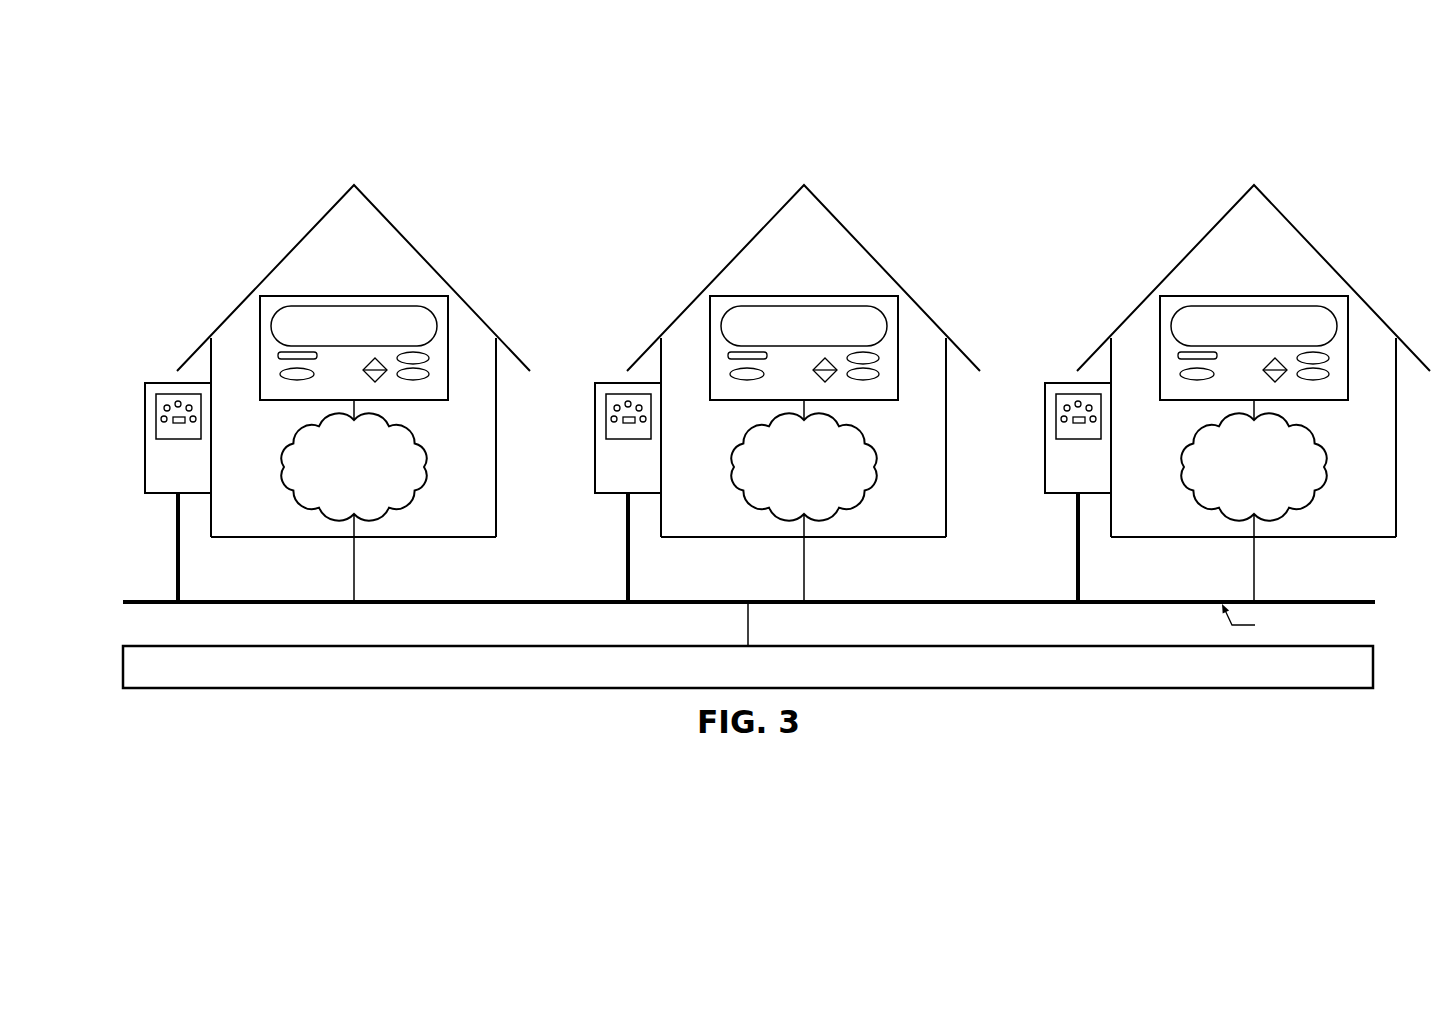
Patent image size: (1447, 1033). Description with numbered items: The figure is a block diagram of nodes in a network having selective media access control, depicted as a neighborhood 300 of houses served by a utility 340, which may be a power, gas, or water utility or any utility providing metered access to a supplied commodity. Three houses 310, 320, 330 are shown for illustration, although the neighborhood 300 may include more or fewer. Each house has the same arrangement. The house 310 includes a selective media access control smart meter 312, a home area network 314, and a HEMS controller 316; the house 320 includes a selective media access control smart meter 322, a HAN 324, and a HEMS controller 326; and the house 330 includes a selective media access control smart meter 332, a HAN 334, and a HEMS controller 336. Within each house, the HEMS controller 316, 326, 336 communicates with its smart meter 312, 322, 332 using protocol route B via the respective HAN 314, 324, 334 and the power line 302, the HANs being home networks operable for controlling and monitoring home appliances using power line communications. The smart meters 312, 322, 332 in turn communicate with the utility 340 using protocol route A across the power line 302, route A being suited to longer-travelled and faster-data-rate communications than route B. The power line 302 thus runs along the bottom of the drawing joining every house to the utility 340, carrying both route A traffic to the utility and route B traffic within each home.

The neighborhood 300 is at (1145, 122).
The power line 302 is at (1198, 601).
The house 310 is at (446, 275).
The selective media access control smart meter 312 is at (145, 438).
The home area network 314 is at (336, 503).
The HEMS controller 316 is at (352, 285).
The house 320 is at (803, 393).
The selective media access control smart meter 322 is at (592, 492).
The HAN 324 is at (803, 475).
The HEMS controller 326 is at (804, 324).
The house 330 is at (1253, 393).
The selective media access control smart meter 332 is at (1042, 492).
The HAN 334 is at (1253, 475).
The HEMS controller 336 is at (1254, 324).
The utility 340 is at (1374, 667).